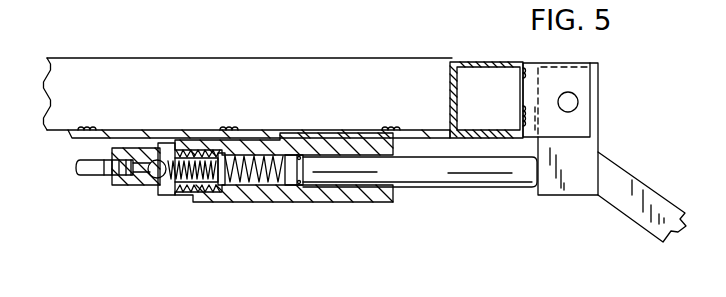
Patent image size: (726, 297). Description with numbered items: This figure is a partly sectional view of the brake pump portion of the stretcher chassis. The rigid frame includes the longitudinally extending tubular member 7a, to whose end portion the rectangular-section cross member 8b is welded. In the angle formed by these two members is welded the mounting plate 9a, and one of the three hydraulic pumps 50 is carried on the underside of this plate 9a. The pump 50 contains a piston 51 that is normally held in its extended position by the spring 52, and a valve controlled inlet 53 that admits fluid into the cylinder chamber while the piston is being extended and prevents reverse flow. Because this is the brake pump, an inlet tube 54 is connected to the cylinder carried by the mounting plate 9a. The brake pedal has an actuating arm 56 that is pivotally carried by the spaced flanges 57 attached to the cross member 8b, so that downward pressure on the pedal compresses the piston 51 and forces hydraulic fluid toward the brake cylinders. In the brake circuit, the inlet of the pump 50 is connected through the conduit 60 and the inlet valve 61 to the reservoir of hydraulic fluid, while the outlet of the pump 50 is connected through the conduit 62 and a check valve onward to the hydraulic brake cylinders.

The longitudinally extending member 7a is at (332, 72).
The cross member 8b is at (468, 63).
The mounting plate 9a is at (87, 138).
The hydraulic pump 50 is at (370, 198).
The piston 51 is at (463, 178).
The spring 52 is at (268, 185).
The valve controlled inlet 53 is at (137, 175).
The inlet tube 54 is at (95, 173).
The actuating arm 56 is at (600, 93).
The spaced flanges 57 is at (580, 80).
The conduit 60 is at (200, 188).
The inlet valve 61 is at (163, 188).
The conduit 62 is at (232, 160).